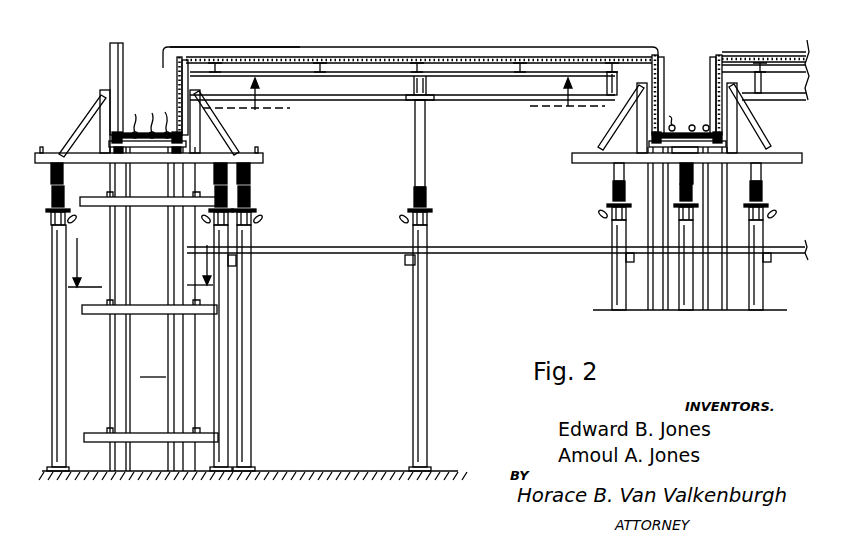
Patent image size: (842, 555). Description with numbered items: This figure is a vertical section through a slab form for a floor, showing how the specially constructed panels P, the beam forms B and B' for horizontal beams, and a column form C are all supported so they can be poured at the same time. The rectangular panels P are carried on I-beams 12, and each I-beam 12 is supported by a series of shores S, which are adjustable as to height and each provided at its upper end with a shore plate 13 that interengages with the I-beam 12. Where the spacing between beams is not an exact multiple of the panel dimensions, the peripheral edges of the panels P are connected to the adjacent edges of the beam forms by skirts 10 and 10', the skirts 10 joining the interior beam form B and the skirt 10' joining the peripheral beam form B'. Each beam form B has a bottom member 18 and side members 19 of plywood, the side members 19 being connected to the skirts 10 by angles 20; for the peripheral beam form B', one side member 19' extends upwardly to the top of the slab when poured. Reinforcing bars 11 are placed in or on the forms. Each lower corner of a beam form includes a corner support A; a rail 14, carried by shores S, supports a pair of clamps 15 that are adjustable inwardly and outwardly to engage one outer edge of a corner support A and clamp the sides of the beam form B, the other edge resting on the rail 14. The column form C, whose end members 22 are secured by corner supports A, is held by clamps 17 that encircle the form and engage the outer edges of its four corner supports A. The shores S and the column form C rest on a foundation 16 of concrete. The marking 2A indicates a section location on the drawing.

The skirt 10 is at (486, 56).
The skirt 10' is at (235, 33).
The reinforcing bars 11 is at (399, 117).
The I-beam 12 is at (328, 97).
The shore plate 13 is at (52, 170).
The rail 14 is at (60, 147).
The clamp 15 is at (103, 98).
The foundation 16 is at (318, 470).
The clamps 17 is at (210, 432).
The bottom member 18 is at (687, 126).
The side member 19 is at (439, 183).
The side member 19' is at (131, 74).
The angle 20 is at (184, 62).
The end member 22 is at (153, 366).
The corner support A is at (108, 164).
The beam form B is at (694, 37).
The beam form B' is at (106, 68).
The column form C is at (107, 362).
The panel P is at (268, 48).
The shore S is at (52, 378).
The section line 2A is at (404, 101).